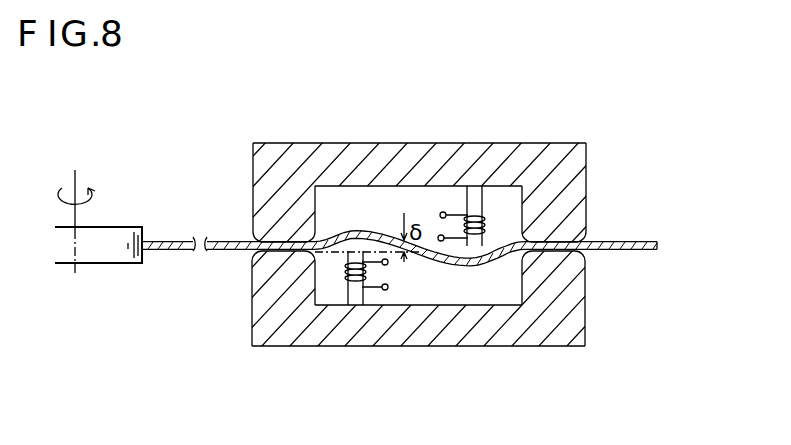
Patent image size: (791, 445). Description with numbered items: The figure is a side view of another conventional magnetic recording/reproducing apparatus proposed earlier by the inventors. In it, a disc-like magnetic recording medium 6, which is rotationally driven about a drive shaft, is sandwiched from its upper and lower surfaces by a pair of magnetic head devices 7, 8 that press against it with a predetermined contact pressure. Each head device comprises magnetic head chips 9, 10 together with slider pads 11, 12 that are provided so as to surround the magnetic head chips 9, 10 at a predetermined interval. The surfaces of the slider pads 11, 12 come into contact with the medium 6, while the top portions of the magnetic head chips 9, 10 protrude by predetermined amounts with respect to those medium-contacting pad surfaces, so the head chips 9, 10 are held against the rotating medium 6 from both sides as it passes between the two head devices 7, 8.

The disc-like magnetic recording medium 6 is at (640, 250).
The magnetic head device 7 is at (420, 152).
The magnetic head device 8 is at (328, 327).
The magnetic head chip 9 is at (488, 250).
The magnetic head chip 10 is at (355, 298).
The slider pad 11 is at (270, 208).
The slider pad 12 is at (270, 268).